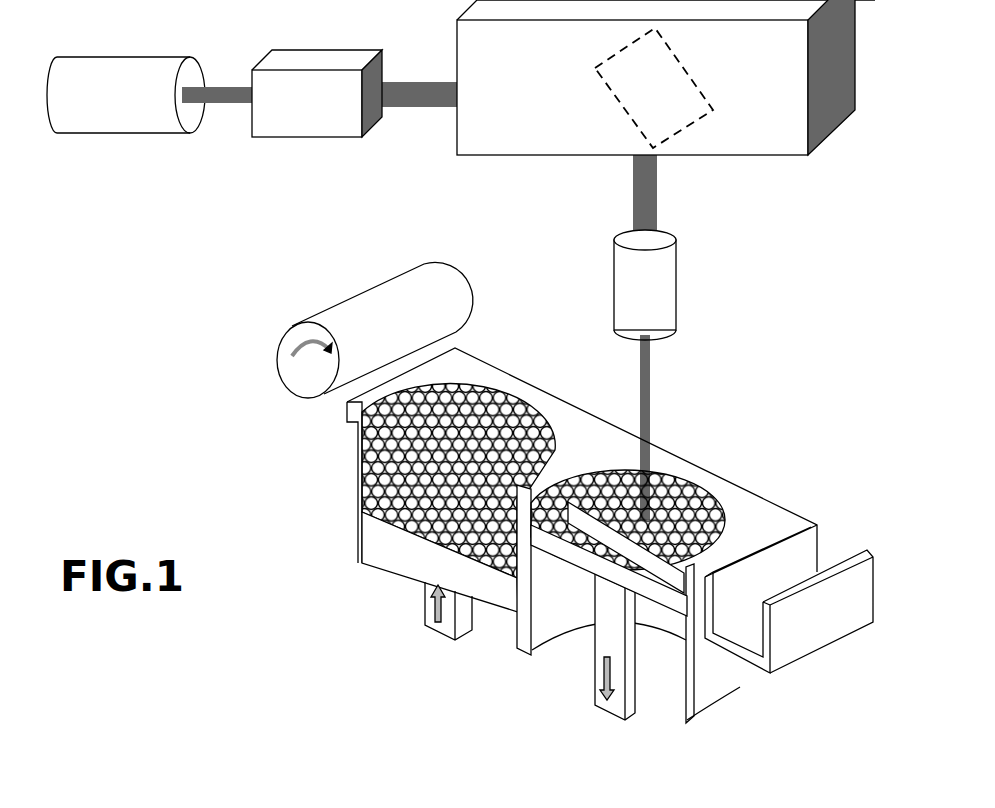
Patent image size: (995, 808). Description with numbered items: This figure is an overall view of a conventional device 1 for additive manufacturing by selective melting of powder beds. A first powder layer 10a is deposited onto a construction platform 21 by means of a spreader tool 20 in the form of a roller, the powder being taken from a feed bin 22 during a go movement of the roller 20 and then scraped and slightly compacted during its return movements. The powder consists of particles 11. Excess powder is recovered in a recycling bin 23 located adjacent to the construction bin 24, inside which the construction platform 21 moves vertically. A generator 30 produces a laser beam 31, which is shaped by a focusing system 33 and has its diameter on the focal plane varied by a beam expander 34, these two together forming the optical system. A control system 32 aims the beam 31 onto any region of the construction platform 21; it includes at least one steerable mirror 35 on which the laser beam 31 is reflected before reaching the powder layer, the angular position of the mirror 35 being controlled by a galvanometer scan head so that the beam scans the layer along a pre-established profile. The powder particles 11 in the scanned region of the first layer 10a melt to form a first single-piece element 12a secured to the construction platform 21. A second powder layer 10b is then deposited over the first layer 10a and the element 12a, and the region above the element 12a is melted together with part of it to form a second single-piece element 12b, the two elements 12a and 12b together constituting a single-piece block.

The apparatus for additive manufacturing 1 is at (803, 287).
The first powder layer 10a is at (537, 524).
The second powder layer 10b is at (540, 503).
The particles 11 is at (377, 492).
The first single-piece element 12a is at (615, 560).
The second single-piece element 12b is at (597, 518).
The spreader tool 20 is at (368, 305).
The construction platform 21 is at (570, 558).
The feed bin 22 is at (358, 445).
The recycling bin 23 is at (822, 612).
The construction bin 24 is at (713, 687).
The generator 30 is at (97, 80).
The laser beam 31 is at (648, 196).
The control system 32 is at (837, 63).
The focusing system 33 is at (327, 61).
The beam expander 34 is at (660, 280).
The steerable mirror 35 is at (660, 95).